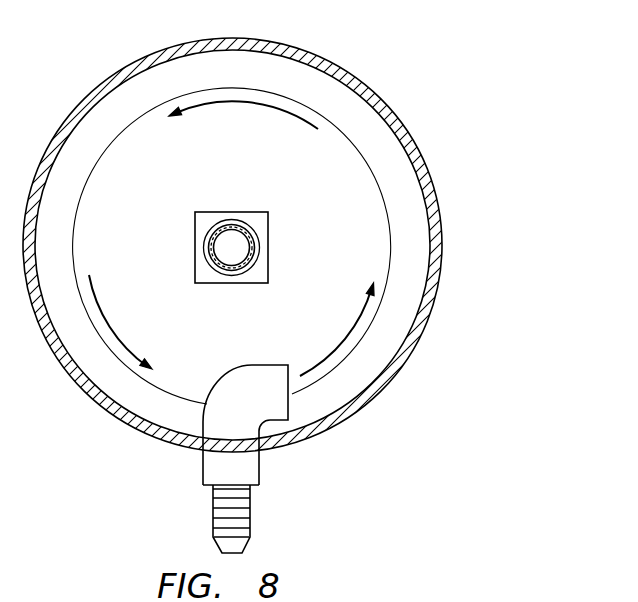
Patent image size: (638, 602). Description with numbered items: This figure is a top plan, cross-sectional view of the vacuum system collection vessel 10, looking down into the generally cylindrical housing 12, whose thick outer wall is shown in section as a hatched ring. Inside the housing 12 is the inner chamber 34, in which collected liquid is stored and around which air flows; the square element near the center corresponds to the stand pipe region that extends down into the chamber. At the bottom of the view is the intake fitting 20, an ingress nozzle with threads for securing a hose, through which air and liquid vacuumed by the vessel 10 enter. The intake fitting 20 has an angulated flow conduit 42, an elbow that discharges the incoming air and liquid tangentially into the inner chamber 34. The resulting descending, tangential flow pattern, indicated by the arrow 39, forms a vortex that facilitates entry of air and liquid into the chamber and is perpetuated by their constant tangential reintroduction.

The vacuum system collection vessel 10 is at (280, 28).
The housing 12 is at (385, 108).
The inner chamber 34 is at (323, 231).
The arrow 39 is at (353, 323).
The angulated flow conduit 42 is at (272, 407).
The intake fitting 20 is at (211, 470).